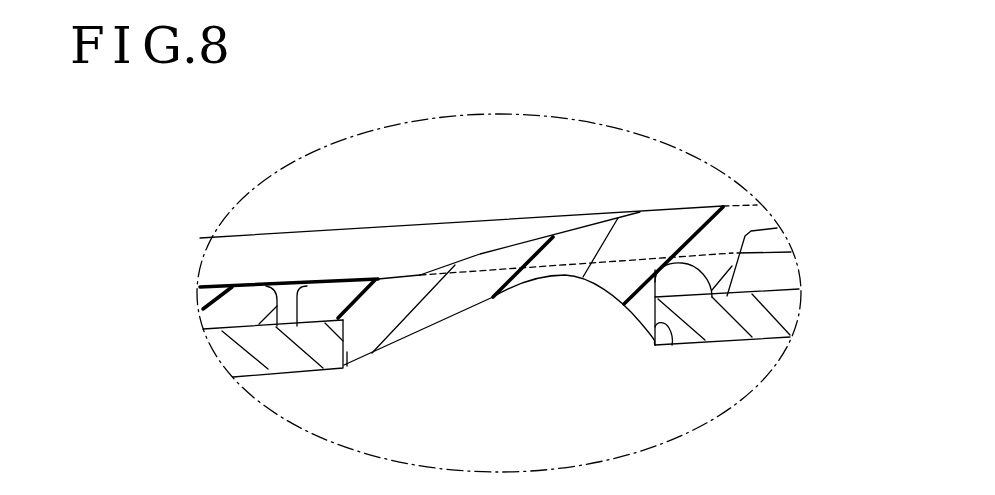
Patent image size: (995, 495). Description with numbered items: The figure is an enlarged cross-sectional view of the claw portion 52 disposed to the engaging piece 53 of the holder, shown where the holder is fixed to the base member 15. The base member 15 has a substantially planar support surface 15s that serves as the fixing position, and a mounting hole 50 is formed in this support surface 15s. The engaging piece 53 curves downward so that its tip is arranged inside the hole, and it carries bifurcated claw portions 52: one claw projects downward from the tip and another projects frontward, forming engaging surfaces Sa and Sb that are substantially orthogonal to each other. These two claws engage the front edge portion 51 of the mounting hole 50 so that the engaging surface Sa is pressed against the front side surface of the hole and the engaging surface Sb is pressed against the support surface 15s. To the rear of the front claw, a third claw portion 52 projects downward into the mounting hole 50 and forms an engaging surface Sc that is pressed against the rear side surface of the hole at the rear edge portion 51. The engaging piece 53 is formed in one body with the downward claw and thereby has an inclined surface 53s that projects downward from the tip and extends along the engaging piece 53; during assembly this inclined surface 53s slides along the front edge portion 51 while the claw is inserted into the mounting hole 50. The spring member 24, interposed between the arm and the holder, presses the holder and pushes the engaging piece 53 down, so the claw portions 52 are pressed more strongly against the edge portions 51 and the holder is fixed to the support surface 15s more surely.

The base member 15 is at (728, 343).
The support surface 15s is at (228, 328).
The spring member 24 is at (473, 222).
The mounting hole 50 is at (343, 342).
The edge portion 51 is at (343, 318).
The claw portion 52 is at (283, 330).
The engaging piece 53 is at (390, 276).
The inclined surface 53s is at (400, 344).
The engaging surface Sa is at (345, 363).
The engaging surface Sb is at (326, 318).
The engaging surface Sc is at (672, 338).